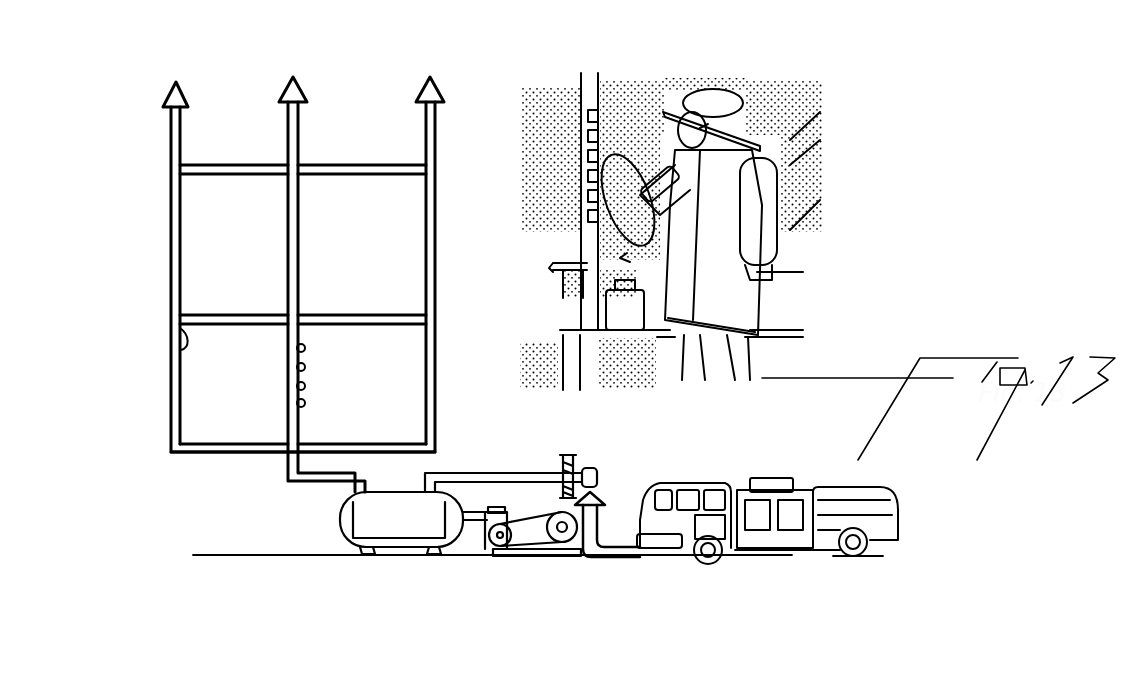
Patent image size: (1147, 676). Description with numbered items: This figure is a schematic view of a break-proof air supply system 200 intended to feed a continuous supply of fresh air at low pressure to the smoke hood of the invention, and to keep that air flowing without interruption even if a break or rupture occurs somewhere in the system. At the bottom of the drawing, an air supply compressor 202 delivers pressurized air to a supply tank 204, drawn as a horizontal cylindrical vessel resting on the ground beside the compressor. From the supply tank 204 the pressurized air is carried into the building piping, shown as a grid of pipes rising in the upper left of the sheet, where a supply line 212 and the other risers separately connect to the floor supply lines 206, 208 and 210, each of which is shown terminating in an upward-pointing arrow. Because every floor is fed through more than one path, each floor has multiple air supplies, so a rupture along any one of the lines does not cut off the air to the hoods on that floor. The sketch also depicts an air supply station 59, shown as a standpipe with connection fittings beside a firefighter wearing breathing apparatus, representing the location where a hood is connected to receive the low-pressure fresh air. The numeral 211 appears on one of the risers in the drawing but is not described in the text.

The air supply system 200 is at (200, 252).
The air supply compressor 202 is at (515, 557).
The supply tank 204 is at (340, 530).
The floor supply line 206 is at (213, 453).
The floor supply line 208 is at (175, 361).
The floor supply line 210 is at (167, 100).
The riser outlet 211 is at (300, 128).
The supply line 212 is at (437, 135).
The air supply station 59 is at (600, 80).